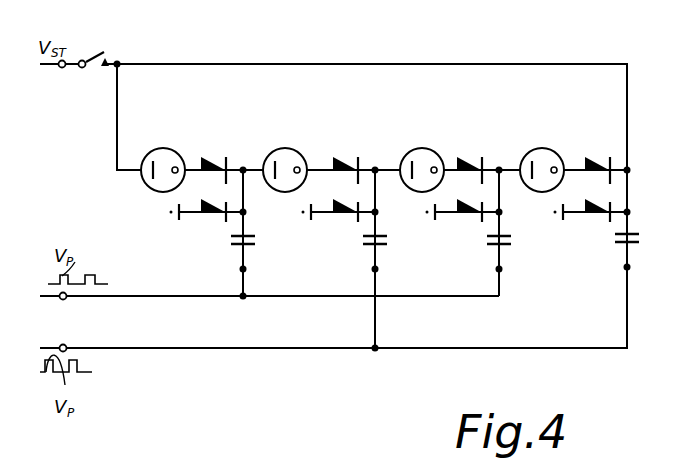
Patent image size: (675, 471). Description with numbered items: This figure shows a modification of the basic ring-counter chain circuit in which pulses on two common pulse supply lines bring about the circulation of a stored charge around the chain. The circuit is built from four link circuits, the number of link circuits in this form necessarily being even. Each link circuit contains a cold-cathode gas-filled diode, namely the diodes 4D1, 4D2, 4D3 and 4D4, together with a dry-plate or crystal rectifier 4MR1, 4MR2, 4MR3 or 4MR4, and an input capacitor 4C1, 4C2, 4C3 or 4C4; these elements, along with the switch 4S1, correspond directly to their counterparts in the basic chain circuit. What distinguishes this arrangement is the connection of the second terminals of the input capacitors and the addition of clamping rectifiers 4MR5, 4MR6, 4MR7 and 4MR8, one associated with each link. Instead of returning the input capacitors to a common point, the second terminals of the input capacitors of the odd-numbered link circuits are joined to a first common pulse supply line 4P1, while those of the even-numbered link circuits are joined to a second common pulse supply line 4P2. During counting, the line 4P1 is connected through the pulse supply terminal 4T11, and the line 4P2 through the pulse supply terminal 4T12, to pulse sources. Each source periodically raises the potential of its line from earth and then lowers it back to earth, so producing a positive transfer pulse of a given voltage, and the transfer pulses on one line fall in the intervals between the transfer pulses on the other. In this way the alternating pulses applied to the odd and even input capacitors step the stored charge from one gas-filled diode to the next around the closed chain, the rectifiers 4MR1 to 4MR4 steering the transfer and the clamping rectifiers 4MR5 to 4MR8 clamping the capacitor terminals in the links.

The start switch 4S1 is at (78, 49).
The cold-cathode gas-filled diode 4D1 is at (163, 158).
The cold-cathode gas-filled diode 4D2 is at (285, 158).
The cold-cathode gas-filled diode 4D3 is at (422, 158).
The cold-cathode gas-filled diode 4D4 is at (542, 158).
The rectifier 4MR1 is at (216, 160).
The rectifier 4MR2 is at (349, 160).
The rectifier 4MR3 is at (481, 160).
The rectifier 4MR4 is at (594, 160).
The clamping rectifier 4MR5 is at (591, 222).
The clamping rectifier 4MR6 is at (207, 224).
The clamping rectifier 4MR7 is at (339, 224).
The clamping rectifier 4MR8 is at (463, 224).
The input capacitor 4C1 is at (610, 249).
The input capacitor 4C2 is at (260, 251).
The input capacitor 4C3 is at (393, 251).
The input capacitor 4C4 is at (516, 250).
The first common pulse supply line 4P1 is at (196, 349).
The second common pulse supply line 4P2 is at (192, 297).
The pulse supply terminal 4T11 is at (66, 346).
The pulse supply terminal 4T12 is at (97, 318).